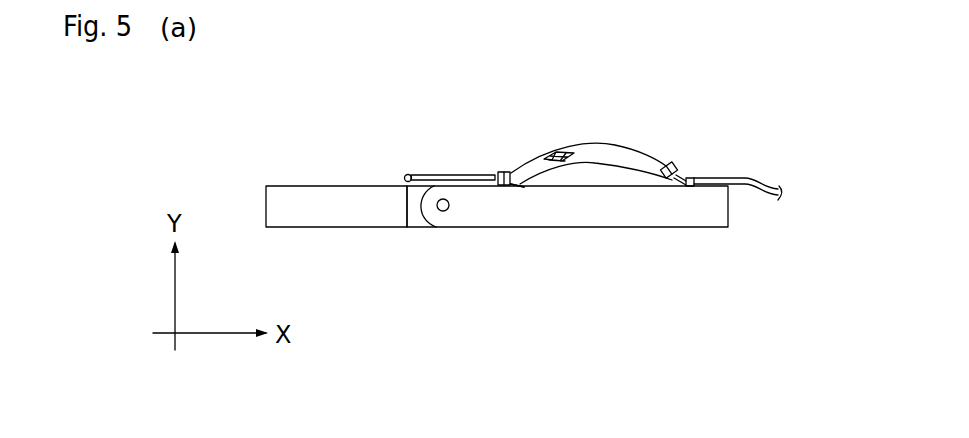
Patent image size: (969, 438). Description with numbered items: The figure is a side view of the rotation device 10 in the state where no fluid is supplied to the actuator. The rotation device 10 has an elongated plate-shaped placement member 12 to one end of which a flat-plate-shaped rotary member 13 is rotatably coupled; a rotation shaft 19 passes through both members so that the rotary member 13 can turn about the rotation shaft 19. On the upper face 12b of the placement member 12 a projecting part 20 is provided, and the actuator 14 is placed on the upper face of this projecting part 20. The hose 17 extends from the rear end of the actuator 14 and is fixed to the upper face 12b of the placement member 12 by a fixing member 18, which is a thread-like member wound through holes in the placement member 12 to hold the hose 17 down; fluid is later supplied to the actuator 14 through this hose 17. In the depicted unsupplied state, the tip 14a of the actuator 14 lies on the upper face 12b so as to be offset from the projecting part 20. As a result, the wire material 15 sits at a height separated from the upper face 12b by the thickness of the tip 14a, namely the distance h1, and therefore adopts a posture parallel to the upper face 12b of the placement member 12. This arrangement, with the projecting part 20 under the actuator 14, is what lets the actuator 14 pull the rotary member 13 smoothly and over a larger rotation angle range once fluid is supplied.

The rotation device 10 is at (835, 333).
The placement member 12 is at (670, 237).
The upper face 12b is at (440, 174).
The rotary member 13 is at (340, 236).
The actuator 14 is at (611, 135).
The tip 14a is at (497, 188).
The wire material 15 is at (466, 173).
The hose 17 is at (748, 174).
The fixing member 18 is at (697, 174).
The rotation shaft 19 is at (443, 212).
The projecting part 20 is at (587, 175).
The distance h1 is at (488, 215).